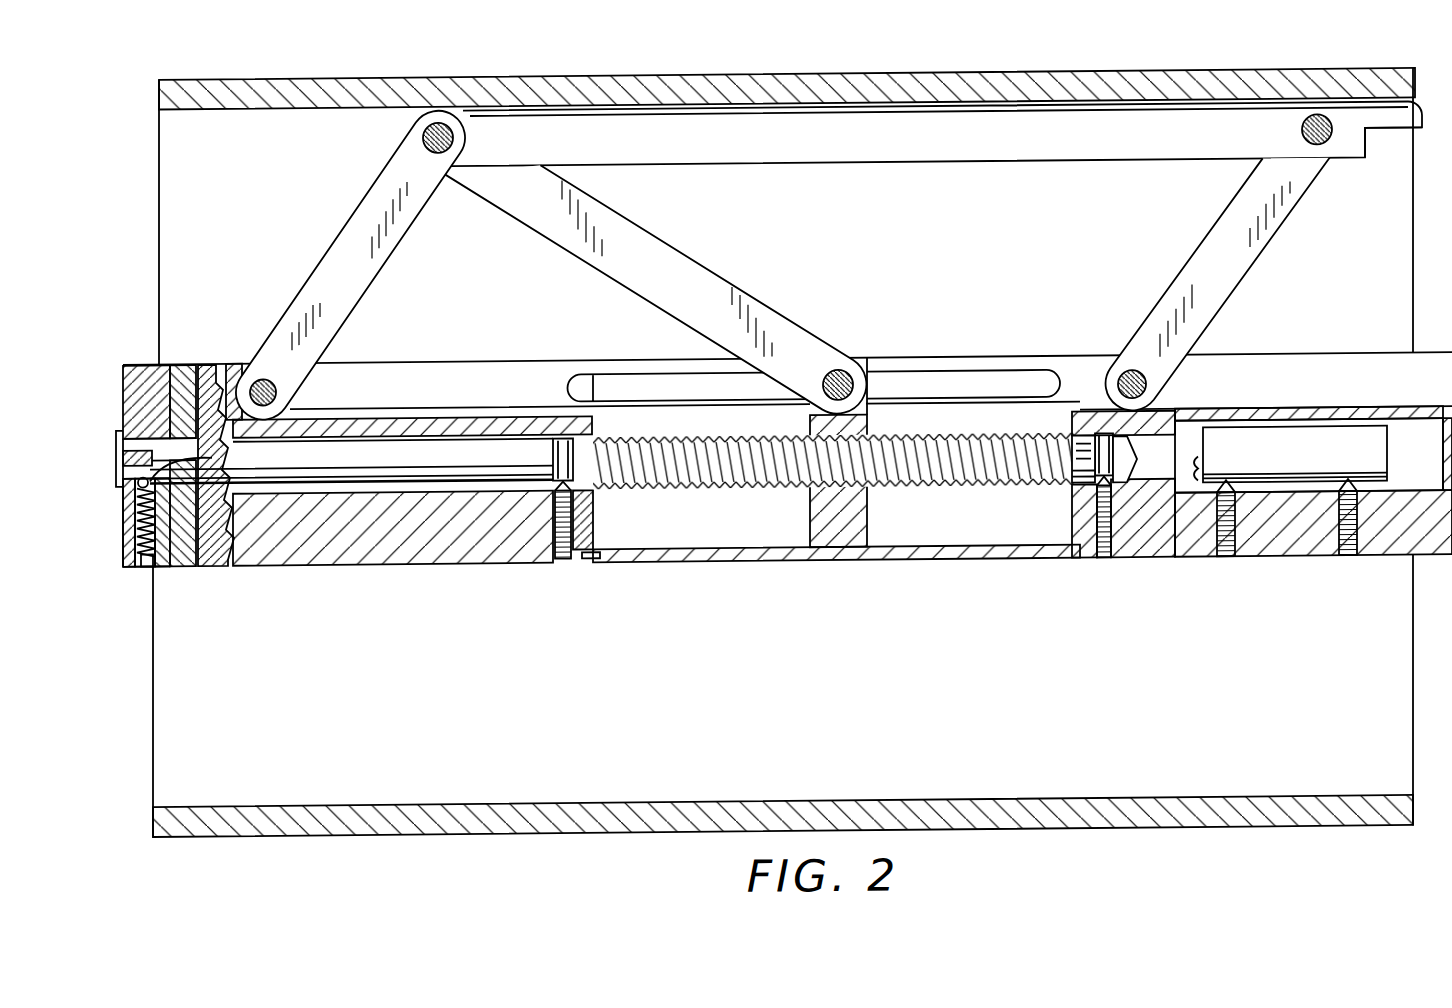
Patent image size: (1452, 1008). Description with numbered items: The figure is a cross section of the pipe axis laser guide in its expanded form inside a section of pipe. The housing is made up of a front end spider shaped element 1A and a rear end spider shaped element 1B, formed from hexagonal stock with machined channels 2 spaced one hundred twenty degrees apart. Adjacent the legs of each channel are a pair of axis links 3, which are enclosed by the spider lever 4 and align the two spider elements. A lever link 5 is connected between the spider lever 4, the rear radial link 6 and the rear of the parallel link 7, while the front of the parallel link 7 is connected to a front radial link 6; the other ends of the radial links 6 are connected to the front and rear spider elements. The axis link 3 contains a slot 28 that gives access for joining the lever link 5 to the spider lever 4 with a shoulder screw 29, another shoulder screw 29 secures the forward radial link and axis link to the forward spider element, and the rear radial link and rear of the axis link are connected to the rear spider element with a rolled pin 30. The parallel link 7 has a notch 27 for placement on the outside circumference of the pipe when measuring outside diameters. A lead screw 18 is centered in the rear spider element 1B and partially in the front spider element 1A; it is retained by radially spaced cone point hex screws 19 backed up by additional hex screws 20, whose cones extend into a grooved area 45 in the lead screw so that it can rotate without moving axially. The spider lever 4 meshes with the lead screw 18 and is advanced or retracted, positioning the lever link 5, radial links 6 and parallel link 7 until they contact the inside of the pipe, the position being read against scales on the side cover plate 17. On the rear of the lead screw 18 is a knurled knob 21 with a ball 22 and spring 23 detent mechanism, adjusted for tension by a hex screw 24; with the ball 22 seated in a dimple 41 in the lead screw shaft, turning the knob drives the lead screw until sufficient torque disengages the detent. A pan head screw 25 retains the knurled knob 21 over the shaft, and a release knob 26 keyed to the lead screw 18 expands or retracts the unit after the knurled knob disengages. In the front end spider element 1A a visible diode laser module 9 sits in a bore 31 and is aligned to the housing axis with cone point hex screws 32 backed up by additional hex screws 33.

The front end spider shaped element 1A is at (1170, 571).
The rear end spider shaped element 1B is at (400, 572).
The machined channels 2 is at (1258, 370).
The axis links 3 is at (483, 364).
The spider lever 4 is at (868, 518).
The lever link 5 is at (677, 253).
The radial link 6 is at (349, 231).
The parallel link 7 is at (1000, 172).
The visible diode laser module 9 is at (1295, 454).
The side cover plate 17 is at (776, 572).
The lead screw 18 is at (720, 500).
The cone point hex screws 19 is at (581, 518).
The hex screws 20 is at (570, 574).
The knurled knob 21 is at (172, 366).
The ball 22 is at (165, 569).
The spring 23 is at (155, 560).
The hex screw 24 is at (140, 570).
The pan head screw 25 is at (116, 434).
The release knob 26 is at (206, 366).
The notch 27 is at (1398, 146).
The slot 28 is at (922, 386).
The shoulder screw 29 is at (852, 371).
The rolled pin 30 is at (280, 397).
The bore 31 is at (1309, 455).
The cone point hex screws 32 is at (1237, 509).
The hex screws 33 is at (1223, 579).
The dimple 41 is at (223, 467).
The grooved area 45 is at (1135, 436).